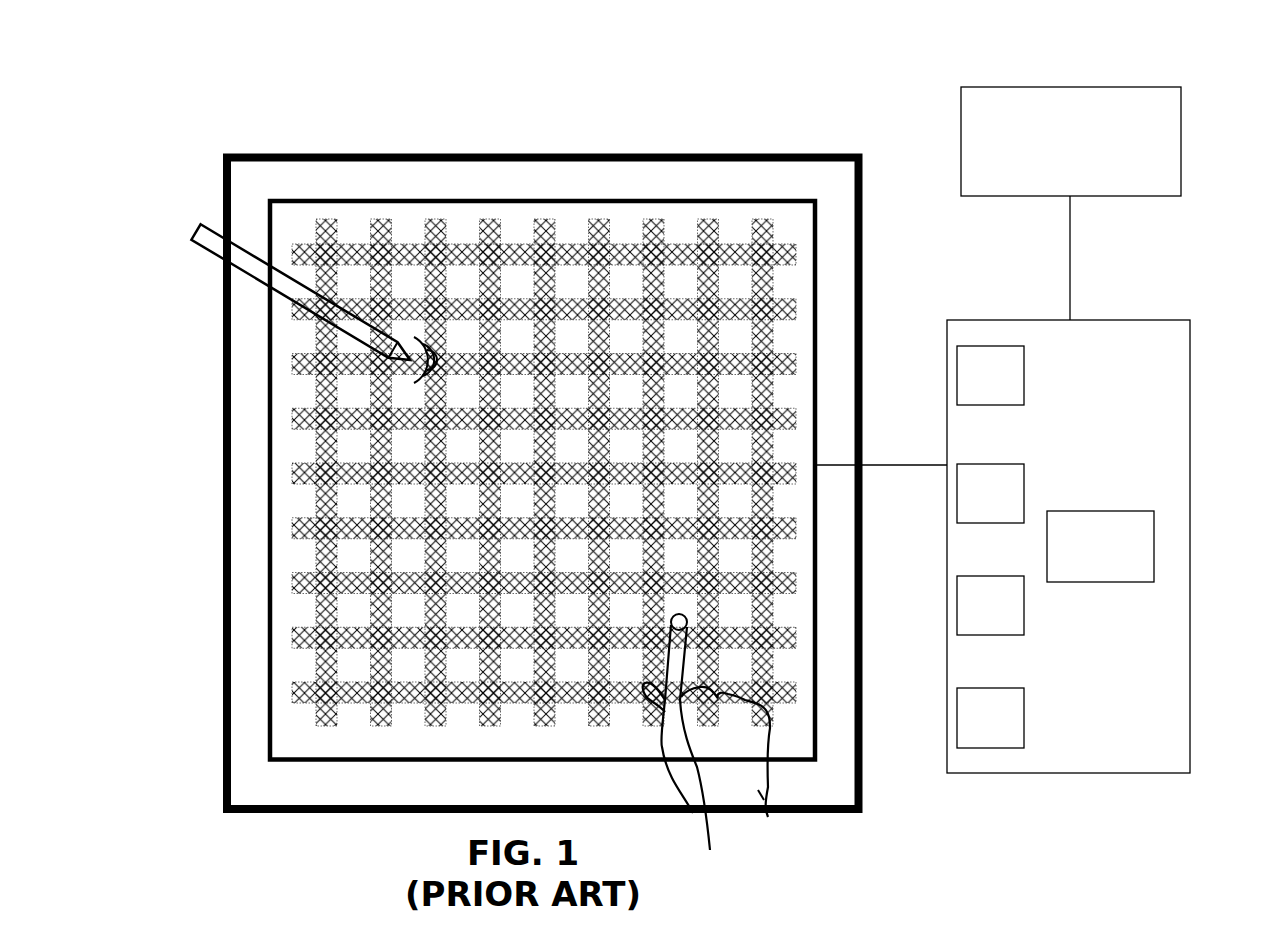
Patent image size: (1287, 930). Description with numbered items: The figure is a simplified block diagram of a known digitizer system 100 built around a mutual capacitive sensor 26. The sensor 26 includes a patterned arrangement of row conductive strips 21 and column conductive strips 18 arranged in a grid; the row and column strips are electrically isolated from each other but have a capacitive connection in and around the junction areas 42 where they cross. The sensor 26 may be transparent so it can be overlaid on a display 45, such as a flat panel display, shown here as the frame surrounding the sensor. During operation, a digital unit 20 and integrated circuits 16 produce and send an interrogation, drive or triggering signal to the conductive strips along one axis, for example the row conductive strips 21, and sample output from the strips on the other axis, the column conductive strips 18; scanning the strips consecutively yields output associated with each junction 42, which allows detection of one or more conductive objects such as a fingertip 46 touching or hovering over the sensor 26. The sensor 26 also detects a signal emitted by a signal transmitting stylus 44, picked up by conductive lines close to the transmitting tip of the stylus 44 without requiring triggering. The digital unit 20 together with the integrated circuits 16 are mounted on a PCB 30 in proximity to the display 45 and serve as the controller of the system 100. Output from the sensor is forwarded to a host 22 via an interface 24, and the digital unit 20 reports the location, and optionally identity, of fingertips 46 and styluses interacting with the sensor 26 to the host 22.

The digitizer system 100 is at (300, 115).
The display 45 is at (487, 155).
The mutual capacitive sensor 26 is at (635, 202).
The row conductive strips 21 is at (292, 425).
The column conductive strips 18 is at (438, 222).
The junction areas 42 is at (367, 410).
The stylus 44 is at (193, 227).
The fingertip 46 is at (706, 748).
The PCB 30 is at (1195, 388).
The integrated circuits 16 is at (1024, 377).
The digital unit 20 is at (1130, 510).
The host 22 is at (1183, 100).
The interface 24 is at (1072, 280).